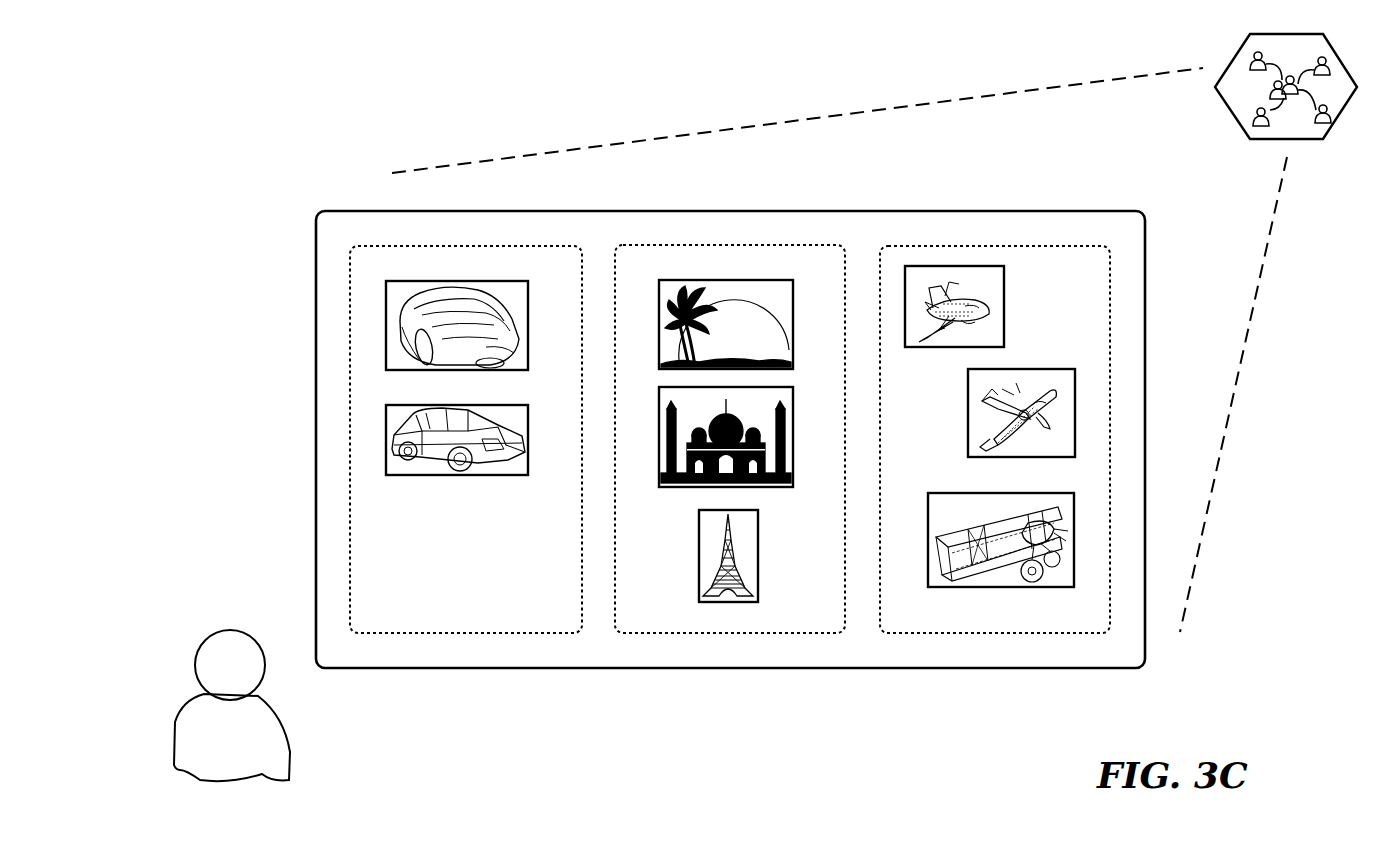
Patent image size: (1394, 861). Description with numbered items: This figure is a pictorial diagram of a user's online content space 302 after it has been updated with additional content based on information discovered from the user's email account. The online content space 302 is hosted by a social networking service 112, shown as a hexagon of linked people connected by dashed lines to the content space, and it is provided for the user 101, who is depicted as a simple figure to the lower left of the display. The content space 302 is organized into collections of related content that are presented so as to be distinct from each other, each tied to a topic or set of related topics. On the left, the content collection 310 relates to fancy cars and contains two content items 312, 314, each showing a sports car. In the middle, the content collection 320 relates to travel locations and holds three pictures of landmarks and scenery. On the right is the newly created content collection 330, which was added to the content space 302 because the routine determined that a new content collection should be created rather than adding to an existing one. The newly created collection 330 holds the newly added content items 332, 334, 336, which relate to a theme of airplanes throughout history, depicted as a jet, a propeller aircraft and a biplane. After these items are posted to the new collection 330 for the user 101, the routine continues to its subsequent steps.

The user 101 is at (172, 741).
The social networking service 112 is at (1323, 139).
The online content space 302 is at (316, 233).
The content collection 310 is at (408, 633).
The content item 312 is at (386, 335).
The content item 314 is at (386, 455).
The content collection 320 is at (682, 633).
The content collection 330 is at (923, 633).
The content item 332 is at (948, 266).
The content item 334 is at (1075, 392).
The content item 336 is at (1020, 587).